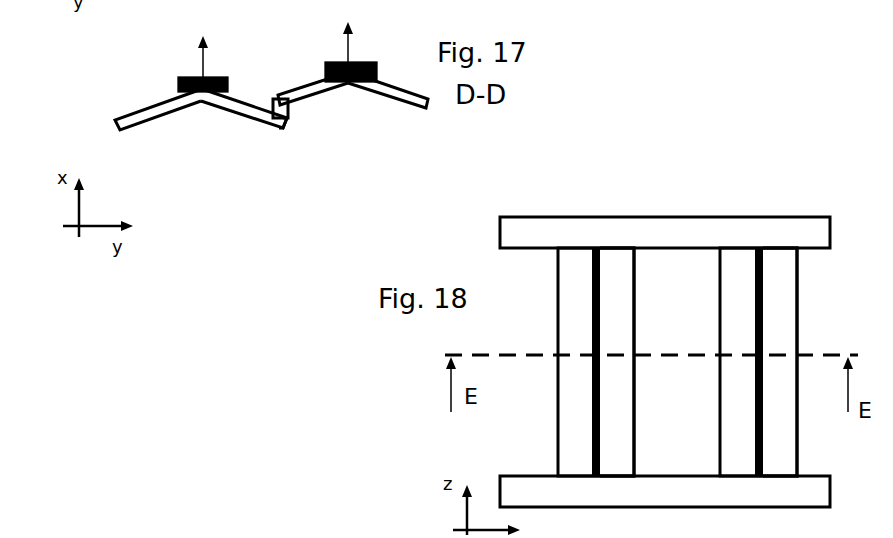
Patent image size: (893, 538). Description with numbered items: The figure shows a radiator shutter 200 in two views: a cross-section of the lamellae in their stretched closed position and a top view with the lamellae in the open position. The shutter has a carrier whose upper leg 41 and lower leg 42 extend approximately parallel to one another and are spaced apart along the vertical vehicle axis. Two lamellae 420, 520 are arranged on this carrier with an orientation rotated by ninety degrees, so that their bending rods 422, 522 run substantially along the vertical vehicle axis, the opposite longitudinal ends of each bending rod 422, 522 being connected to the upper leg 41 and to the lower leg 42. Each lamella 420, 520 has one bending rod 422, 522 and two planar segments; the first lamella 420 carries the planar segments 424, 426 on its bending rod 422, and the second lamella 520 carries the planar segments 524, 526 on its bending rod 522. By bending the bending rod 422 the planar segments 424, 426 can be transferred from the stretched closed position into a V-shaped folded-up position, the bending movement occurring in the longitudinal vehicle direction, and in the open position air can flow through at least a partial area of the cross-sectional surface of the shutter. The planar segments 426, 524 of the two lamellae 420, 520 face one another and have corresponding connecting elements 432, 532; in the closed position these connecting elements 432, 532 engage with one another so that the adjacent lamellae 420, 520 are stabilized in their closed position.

In FIG. 18, the radiator shutter 200 is at (650, 117).
In FIG. 18, the upper leg 41 is at (670, 225).
In FIG. 17, the lower leg 42 is at (117, 6).
In FIG. 18, the lower leg 42 is at (685, 483).
In FIG. 17, the lamella 420 is at (197, 168).
In FIG. 17, the bending rod 422 is at (181, 76).
In FIG. 18, the bending rod 422 is at (597, 265).
In FIG. 17, the planar segment 424 is at (143, 125).
In FIG. 18, the planar segment 424 is at (567, 267).
In FIG. 17, the planar segment 426 is at (243, 118).
In FIG. 18, the planar segment 426 is at (612, 265).
In FIG. 17, the connecting element 432 is at (284, 131).
In FIG. 17, the lamella 520 is at (357, 144).
In FIG. 17, the bending rod 522 is at (332, 62).
In FIG. 18, the bending rod 522 is at (757, 265).
In FIG. 17, the planar segment 524 is at (305, 98).
In FIG. 18, the planar segment 524 is at (728, 258).
In FIG. 17, the planar segment 526 is at (394, 98).
In FIG. 18, the planar segment 526 is at (788, 258).
In FIG. 17, the connecting element 532 is at (270, 97).